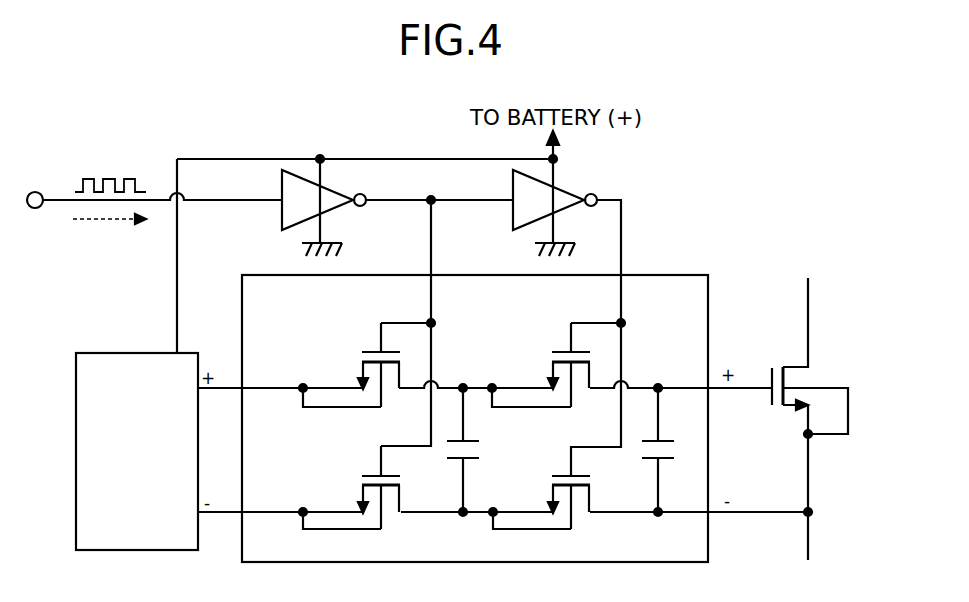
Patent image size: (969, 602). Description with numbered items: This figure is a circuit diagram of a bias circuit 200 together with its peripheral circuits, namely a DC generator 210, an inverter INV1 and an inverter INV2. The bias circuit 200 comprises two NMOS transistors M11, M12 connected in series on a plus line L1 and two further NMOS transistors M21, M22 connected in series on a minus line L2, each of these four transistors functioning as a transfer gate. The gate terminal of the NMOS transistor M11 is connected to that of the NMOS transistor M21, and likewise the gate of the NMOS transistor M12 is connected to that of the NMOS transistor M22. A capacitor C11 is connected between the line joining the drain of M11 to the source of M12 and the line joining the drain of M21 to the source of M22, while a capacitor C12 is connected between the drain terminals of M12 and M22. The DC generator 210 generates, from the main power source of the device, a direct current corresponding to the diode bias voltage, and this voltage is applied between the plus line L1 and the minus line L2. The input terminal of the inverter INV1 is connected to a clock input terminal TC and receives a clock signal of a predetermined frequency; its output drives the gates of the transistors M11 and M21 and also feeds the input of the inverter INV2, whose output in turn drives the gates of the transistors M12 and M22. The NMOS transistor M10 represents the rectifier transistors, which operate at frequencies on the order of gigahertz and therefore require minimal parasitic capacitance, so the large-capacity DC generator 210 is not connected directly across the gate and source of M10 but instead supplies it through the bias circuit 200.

The clock input terminal TC is at (35, 192).
The inverter INV1 is at (345, 196).
The inverter INV2 is at (575, 196).
The bias circuit 200 is at (685, 275).
The DC generator 210 is at (115, 353).
The plus line L1 is at (226, 386).
The minus line L2 is at (222, 515).
The NMOS transistor M11 is at (356, 357).
The NMOS transistor M12 is at (548, 357).
The NMOS transistor M21 is at (356, 481).
The NMOS transistor M22 is at (550, 481).
The capacitor C11 is at (480, 448).
The capacitor C12 is at (637, 448).
The NMOS transistor M10 is at (805, 380).